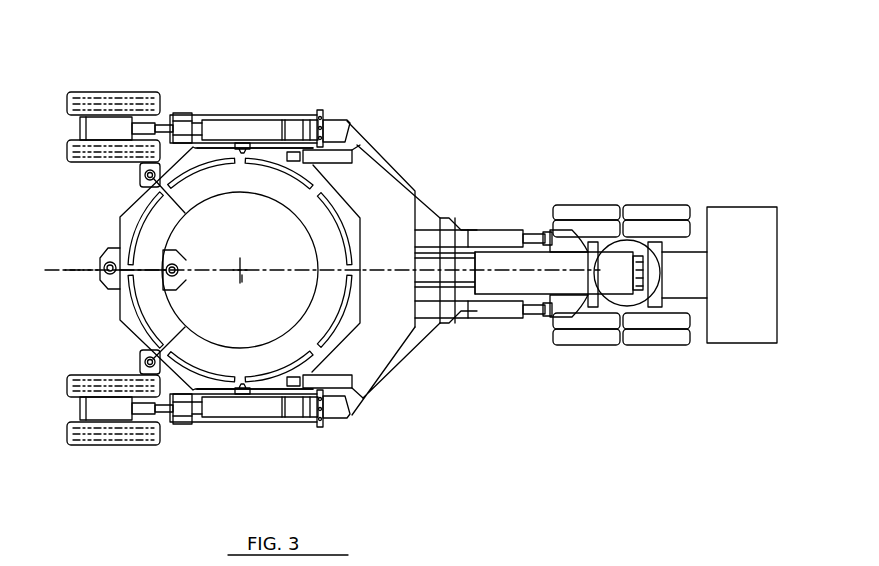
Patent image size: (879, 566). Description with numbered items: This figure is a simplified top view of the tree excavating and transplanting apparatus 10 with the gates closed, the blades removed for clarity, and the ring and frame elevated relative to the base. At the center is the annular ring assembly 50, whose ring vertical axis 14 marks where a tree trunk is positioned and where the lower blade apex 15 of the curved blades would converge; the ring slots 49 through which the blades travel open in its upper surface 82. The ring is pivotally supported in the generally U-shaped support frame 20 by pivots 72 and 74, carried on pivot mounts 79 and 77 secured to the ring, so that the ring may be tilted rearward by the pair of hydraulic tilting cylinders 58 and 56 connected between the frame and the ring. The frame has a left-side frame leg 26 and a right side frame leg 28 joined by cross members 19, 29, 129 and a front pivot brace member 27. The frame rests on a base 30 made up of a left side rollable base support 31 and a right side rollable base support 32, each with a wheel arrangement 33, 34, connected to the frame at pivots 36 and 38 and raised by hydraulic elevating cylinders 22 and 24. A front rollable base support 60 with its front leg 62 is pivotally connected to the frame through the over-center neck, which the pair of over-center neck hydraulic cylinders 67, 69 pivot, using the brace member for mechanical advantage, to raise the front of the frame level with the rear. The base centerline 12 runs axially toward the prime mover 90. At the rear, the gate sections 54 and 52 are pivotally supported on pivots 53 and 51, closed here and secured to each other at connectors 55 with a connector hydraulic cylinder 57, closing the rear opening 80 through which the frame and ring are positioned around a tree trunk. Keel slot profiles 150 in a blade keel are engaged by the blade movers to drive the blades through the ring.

The tree excavating and transplanting apparatus 10 is at (466, 118).
The base centerline 12 is at (393, 268).
The ring vertical axis 14 is at (240, 270).
The lower blade apex 15 is at (242, 275).
The cross member 19 is at (395, 363).
The support frame 20 is at (383, 160).
The hydraulic elevating cylinder 22 is at (257, 127).
The hydraulic elevating cylinder 24 is at (257, 410).
The left-side frame leg 26 is at (338, 127).
The front pivot brace member 27 is at (430, 213).
The right side frame leg 28 is at (333, 415).
The cross member 29 is at (407, 187).
The base 30 is at (53, 177).
The left side rollable base support 31 is at (107, 127).
The right side rollable base support 32 is at (93, 407).
The wheel arrangement 33 is at (135, 100).
The wheel arrangement 34 is at (73, 385).
The pivot 36 is at (177, 117).
The pivot 38 is at (177, 417).
The ring slots 49 is at (300, 355).
The annular ring assembly 50 is at (318, 223).
The pivot 51 is at (138, 360).
The gate section 52 is at (125, 297).
The pivot 53 is at (140, 177).
The gate section 54 is at (125, 230).
The connectors 55 is at (175, 270).
The hydraulic tilting cylinder 56 is at (333, 383).
The connector hydraulic cylinder 57 is at (100, 268).
The hydraulic tilting cylinder 58 is at (336, 160).
The front rollable base support 60 is at (617, 186).
The front leg 62 is at (567, 275).
The over-center neck hydraulic cylinder 67 is at (497, 237).
The over-center neck hydraulic cylinder 69 is at (493, 308).
The pivot 72 is at (243, 140).
The pivot 74 is at (240, 396).
The pivot mount 77 is at (205, 390).
The pivot mount 79 is at (202, 140).
The rear opening 80 is at (90, 309).
The upper surface 82 is at (312, 206).
The prime mover 90 is at (752, 241).
The cross member 129 is at (402, 311).
The keel slot profiles 150 is at (272, 175).